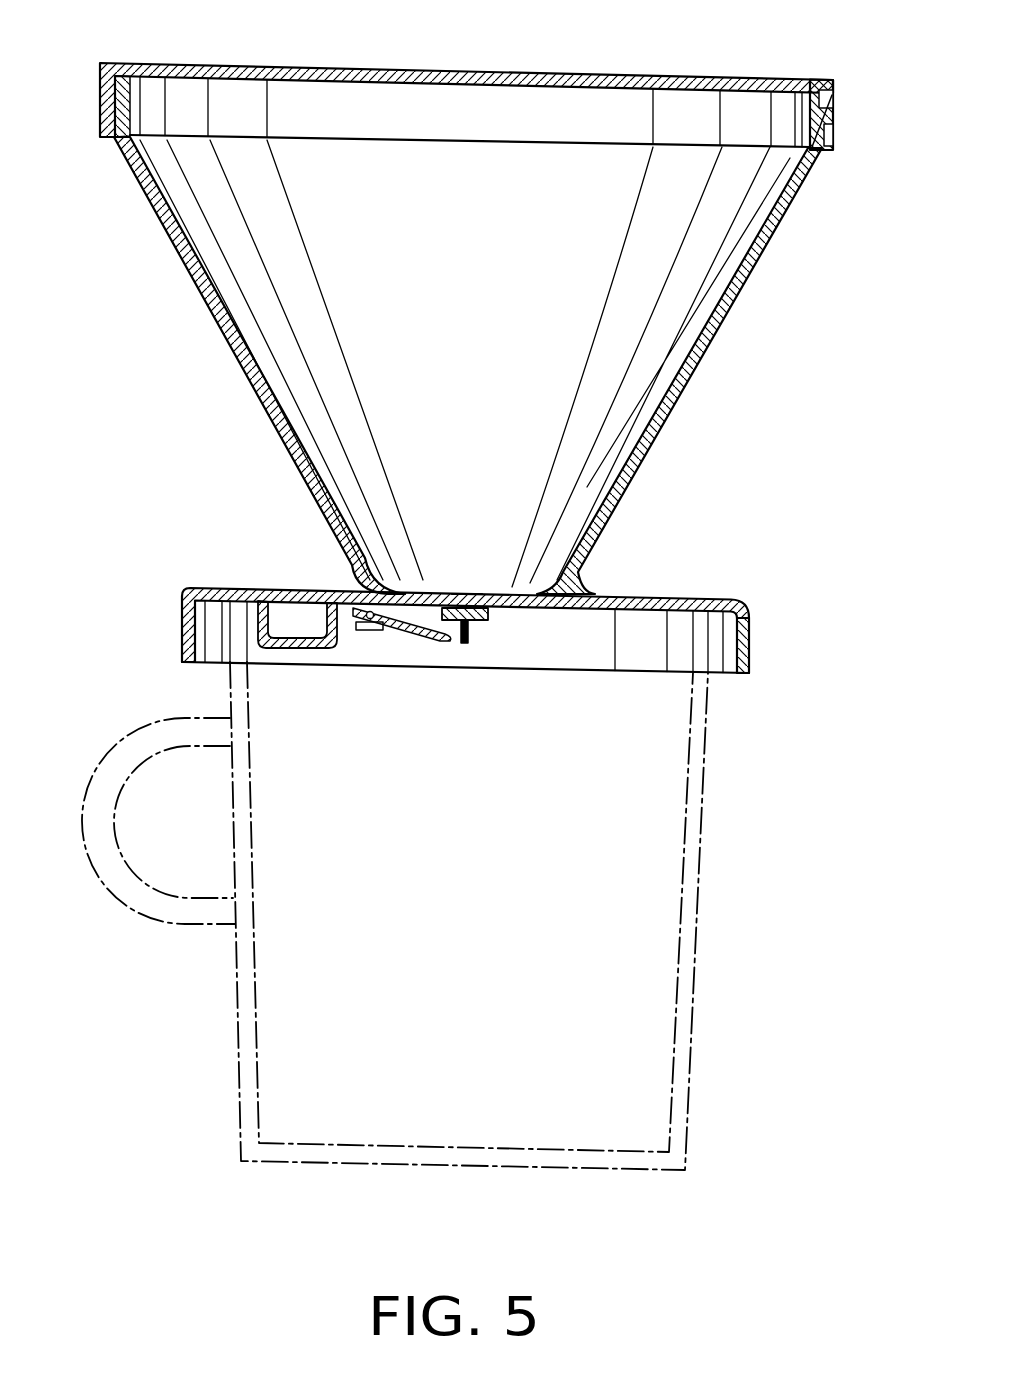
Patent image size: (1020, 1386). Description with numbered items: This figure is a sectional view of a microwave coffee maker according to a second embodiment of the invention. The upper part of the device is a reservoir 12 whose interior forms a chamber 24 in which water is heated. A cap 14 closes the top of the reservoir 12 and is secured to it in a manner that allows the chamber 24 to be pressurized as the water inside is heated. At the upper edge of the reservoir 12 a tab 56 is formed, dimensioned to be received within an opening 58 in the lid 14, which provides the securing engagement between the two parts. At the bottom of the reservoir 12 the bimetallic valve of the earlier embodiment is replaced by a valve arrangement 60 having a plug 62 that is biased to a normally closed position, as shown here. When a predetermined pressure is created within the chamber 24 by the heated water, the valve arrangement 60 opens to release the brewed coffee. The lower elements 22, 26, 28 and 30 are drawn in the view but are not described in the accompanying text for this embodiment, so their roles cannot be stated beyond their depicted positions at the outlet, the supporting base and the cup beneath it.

The cap 14 is at (550, 73).
The tab 56 is at (833, 110).
The opening 58 is at (833, 127).
The reservoir 12 is at (694, 372).
The chamber 24 is at (492, 364).
The outlet 22 is at (468, 595).
The base plate 26 is at (666, 597).
The end wall 28 is at (750, 622).
The valve arrangement 60 is at (415, 628).
The plug 62 is at (496, 613).
The mug 30 is at (700, 920).